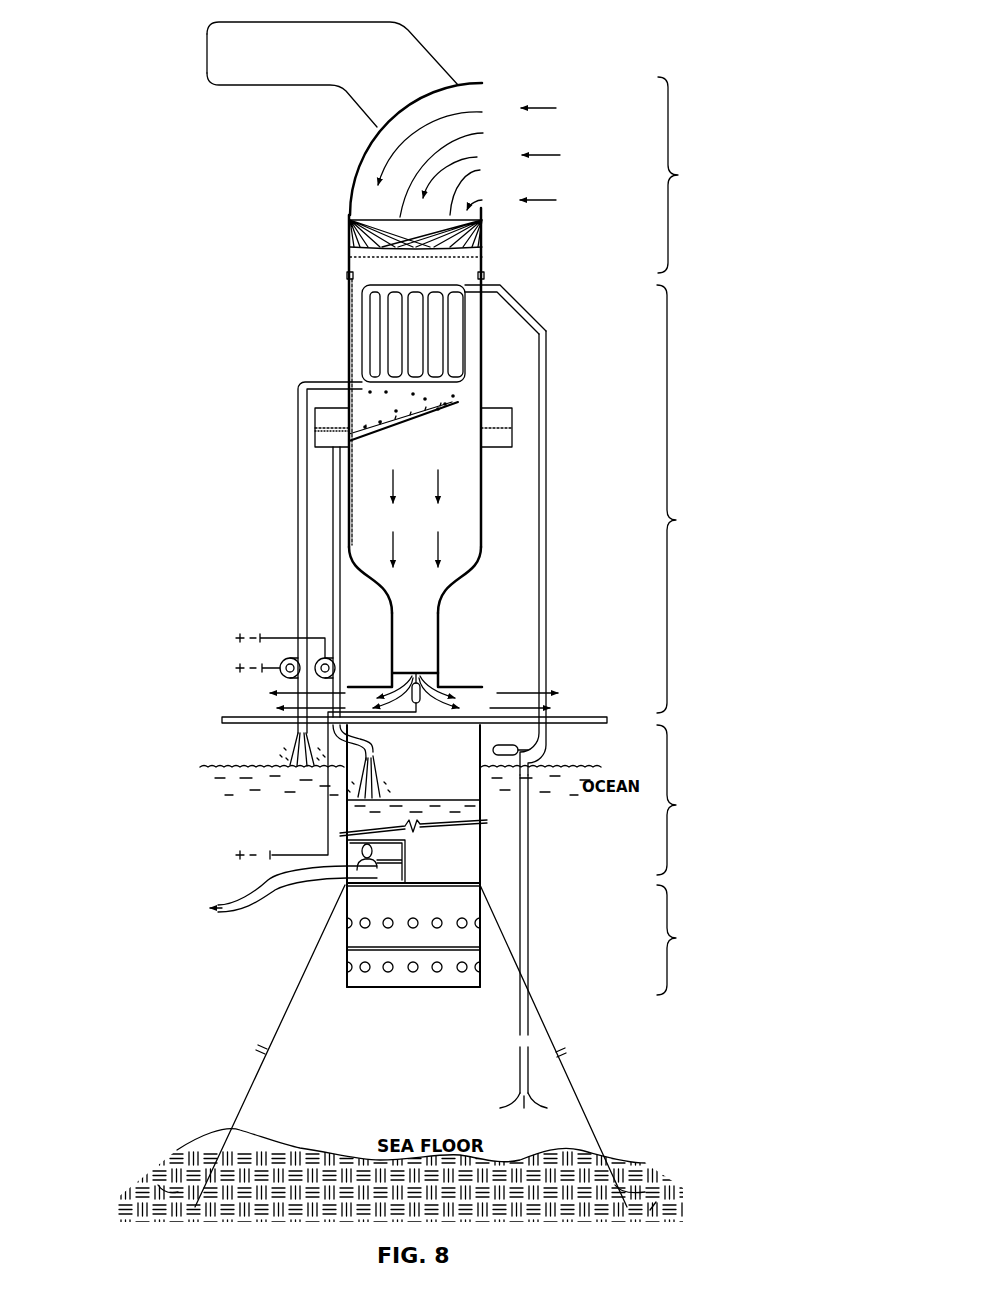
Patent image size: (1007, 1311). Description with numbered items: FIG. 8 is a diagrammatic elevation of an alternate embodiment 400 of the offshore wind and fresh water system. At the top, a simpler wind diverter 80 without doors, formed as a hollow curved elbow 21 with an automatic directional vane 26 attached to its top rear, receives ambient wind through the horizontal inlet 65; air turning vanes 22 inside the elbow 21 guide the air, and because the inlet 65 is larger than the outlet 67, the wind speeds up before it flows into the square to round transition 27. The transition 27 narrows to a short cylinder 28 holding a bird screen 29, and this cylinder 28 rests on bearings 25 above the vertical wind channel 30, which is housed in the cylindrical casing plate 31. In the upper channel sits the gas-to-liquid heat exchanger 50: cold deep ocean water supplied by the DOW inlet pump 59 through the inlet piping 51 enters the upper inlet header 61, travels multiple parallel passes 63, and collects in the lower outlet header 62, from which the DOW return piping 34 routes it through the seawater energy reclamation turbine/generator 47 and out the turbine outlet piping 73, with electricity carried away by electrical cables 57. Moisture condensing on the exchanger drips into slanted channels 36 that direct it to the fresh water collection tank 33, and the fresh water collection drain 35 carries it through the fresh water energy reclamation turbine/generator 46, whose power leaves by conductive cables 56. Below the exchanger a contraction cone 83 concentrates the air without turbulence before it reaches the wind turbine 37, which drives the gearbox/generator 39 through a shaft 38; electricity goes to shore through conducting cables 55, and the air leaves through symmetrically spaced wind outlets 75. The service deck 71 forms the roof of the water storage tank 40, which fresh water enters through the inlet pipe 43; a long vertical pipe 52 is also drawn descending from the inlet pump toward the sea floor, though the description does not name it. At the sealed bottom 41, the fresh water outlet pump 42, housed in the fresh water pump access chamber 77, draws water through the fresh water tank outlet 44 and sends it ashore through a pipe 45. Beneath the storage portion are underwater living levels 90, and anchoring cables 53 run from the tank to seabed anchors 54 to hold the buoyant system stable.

The embodiment 400 is at (117, 97).
The automatic directional vane 26 is at (229, 21).
The curved elbow 21 is at (362, 150).
The air turning vanes 22 is at (483, 133).
The horizontal inlet 65 is at (480, 170).
The wind diverter 80 is at (681, 175).
The outlet 67 is at (417, 267).
The square to round transition 27 is at (488, 246).
The cylinder 28 is at (348, 262).
The bird screen 29 is at (486, 276).
The bearings 25 is at (346, 276).
The upper DOW inlet header 61 is at (476, 285).
The gas-to-liquid heat exchanger 50 is at (358, 305).
The cylindrical casing plate 31 is at (348, 345).
The lower DOW outlet header 62 is at (358, 378).
The parallel heat exchanger circuits 63 is at (463, 347).
The DOW return piping 34 is at (300, 428).
The condensate collection channels 36 is at (388, 433).
The fresh water collection tank 33 is at (326, 447).
The heat exchanger inlet piping 51 is at (547, 470).
The vertical wind channel 30 is at (680, 499).
The fresh water collection drain 35 is at (330, 522).
The contraction cone 83 is at (473, 583).
The conductive cables 56 is at (288, 635).
The fresh water energy reclamation turbine/generator 46 is at (322, 657).
The electrical cables 57 is at (278, 663).
The wind turbine 37 is at (407, 673).
The shaft 38 is at (420, 673).
The wind outlets 75 is at (480, 698).
The turbine outlet piping 73 is at (265, 700).
The seawater energy reclamation turbine/generator 47 is at (285, 680).
The service deck 71 is at (582, 717).
The inlet pipe 43 is at (375, 748).
The gearbox/generator 39 is at (420, 693).
The DOW inlet pump 59 is at (540, 752).
The water storage tank 40 is at (681, 800).
The conducting cables 55 is at (327, 812).
The fresh water pump access chamber 77 is at (340, 860).
The fresh water tank outlet 44 is at (405, 860).
The pipe 45 is at (268, 905).
The fresh water outlet pump 42 is at (377, 883).
The bottom 41 is at (452, 887).
The cold water intake pipe 52 is at (527, 870).
The underwater living levels 90 is at (681, 940).
The anchoring cables 53 is at (545, 1010).
The seabed anchors 54 is at (622, 1168).